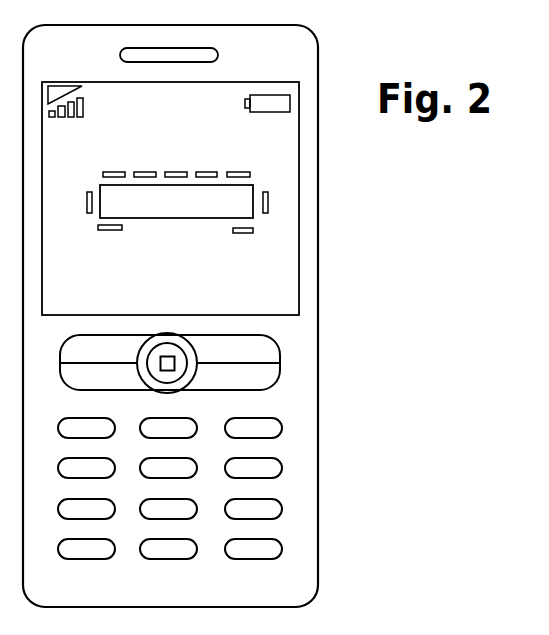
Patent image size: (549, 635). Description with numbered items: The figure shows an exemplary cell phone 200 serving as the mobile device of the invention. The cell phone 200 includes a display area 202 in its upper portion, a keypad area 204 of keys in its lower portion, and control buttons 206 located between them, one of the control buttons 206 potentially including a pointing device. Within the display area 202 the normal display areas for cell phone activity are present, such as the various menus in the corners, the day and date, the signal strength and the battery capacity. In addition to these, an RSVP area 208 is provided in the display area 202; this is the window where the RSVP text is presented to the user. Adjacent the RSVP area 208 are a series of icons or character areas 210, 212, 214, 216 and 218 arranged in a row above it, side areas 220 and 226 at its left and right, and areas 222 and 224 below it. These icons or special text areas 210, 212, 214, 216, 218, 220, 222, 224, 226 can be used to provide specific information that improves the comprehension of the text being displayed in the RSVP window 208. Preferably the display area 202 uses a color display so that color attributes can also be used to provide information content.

The cell phone 200 is at (318, 432).
The display area 202 is at (300, 200).
The keypad area 204 is at (293, 500).
The control buttons 206 is at (302, 363).
The RSVP area 208 is at (217, 218).
The icon or character area 210 is at (251, 174).
The icon or character area 212 is at (210, 171).
The icon or character area 214 is at (180, 172).
The icon or character area 216 is at (146, 172).
The icon or character area 218 is at (112, 172).
The icon or character area 220 is at (86, 203).
The icon or character area 222 is at (100, 228).
The icon or character area 224 is at (232, 230).
The icon or character area 226 is at (265, 214).